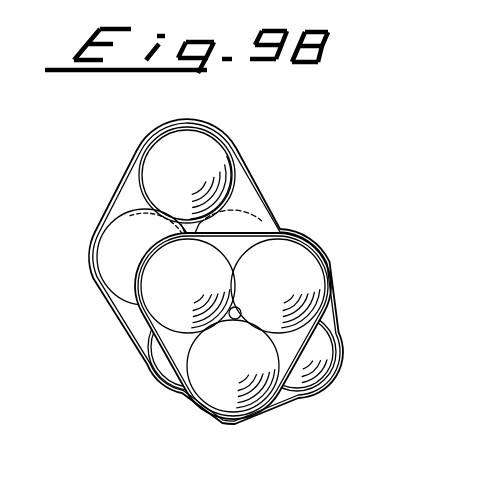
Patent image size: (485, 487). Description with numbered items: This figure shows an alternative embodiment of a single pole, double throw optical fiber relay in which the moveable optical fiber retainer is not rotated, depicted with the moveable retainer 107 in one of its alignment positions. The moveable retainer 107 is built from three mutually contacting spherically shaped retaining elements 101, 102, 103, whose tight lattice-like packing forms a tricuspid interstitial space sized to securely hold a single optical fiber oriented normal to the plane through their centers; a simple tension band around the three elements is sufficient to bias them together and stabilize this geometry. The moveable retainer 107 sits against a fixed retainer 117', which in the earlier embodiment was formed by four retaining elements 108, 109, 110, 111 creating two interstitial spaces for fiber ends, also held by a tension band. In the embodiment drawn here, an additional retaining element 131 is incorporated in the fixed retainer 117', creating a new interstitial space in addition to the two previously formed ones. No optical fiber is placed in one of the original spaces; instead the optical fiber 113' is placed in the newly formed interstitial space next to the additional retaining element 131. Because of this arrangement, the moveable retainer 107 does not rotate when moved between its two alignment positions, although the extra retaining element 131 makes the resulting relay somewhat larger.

The retaining element 101 is at (163, 292).
The retaining element 102 is at (312, 270).
The retaining element 103 is at (221, 398).
The moveable retainer 107 is at (344, 283).
The retaining element 108 is at (115, 255).
The retaining element 109 is at (158, 362).
The retaining element 110 is at (313, 358).
The retaining element 111 is at (258, 226).
The optical fiber 113' is at (240, 190).
The fixed retainer 117' is at (192, 271).
The additional retaining element 131 is at (207, 149).